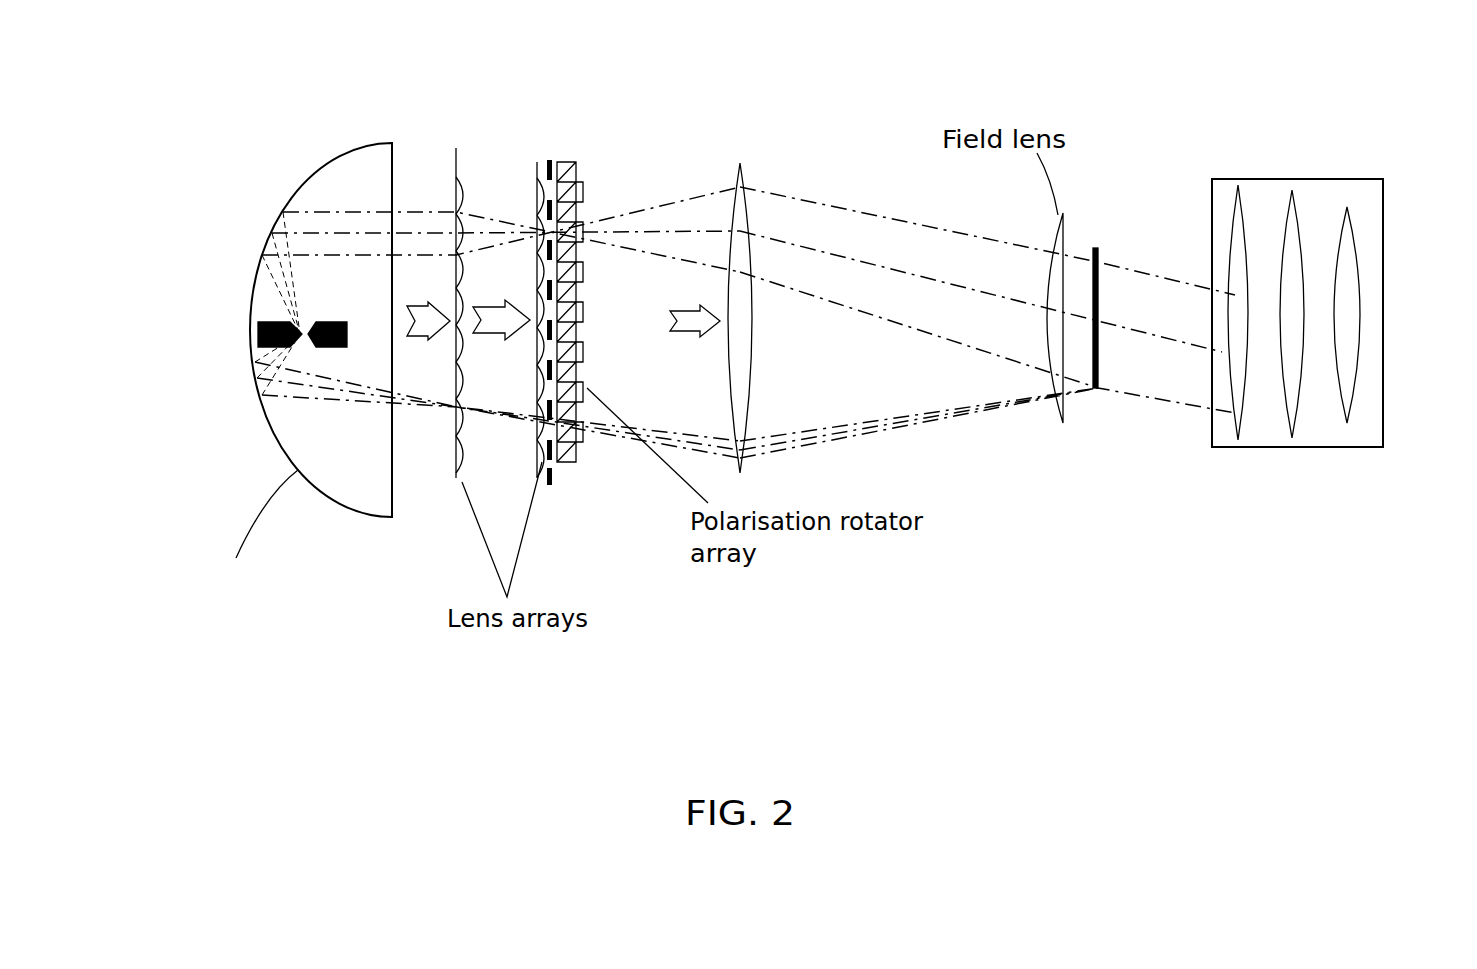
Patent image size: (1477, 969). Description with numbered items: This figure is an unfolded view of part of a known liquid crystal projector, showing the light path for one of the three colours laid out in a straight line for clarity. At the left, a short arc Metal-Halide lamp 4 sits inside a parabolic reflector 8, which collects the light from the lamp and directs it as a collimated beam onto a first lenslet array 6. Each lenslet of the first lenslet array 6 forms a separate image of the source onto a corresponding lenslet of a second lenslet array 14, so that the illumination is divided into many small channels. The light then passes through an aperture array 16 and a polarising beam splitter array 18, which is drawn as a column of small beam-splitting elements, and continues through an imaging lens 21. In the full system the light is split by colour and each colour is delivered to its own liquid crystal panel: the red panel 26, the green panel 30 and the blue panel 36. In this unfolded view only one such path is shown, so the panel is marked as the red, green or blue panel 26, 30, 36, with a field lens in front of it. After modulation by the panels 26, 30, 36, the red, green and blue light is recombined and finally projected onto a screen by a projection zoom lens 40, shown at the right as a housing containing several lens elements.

The short arc Metal-Halide lamp 4 is at (297, 330).
The first lenslet array 6 is at (456, 165).
The parabolic reflector 8 is at (320, 165).
The second lenslet array 14 is at (537, 170).
The aperture array 16 is at (548, 160).
The polarising beam splitter array 18 is at (570, 467).
The imaging lens 21 is at (743, 215).
The red panel 26 is at (1203, 413).
The green panel 30 is at (1203, 413).
The blue panel 36 is at (1100, 388).
The projection zoom lens 40 is at (1303, 210).